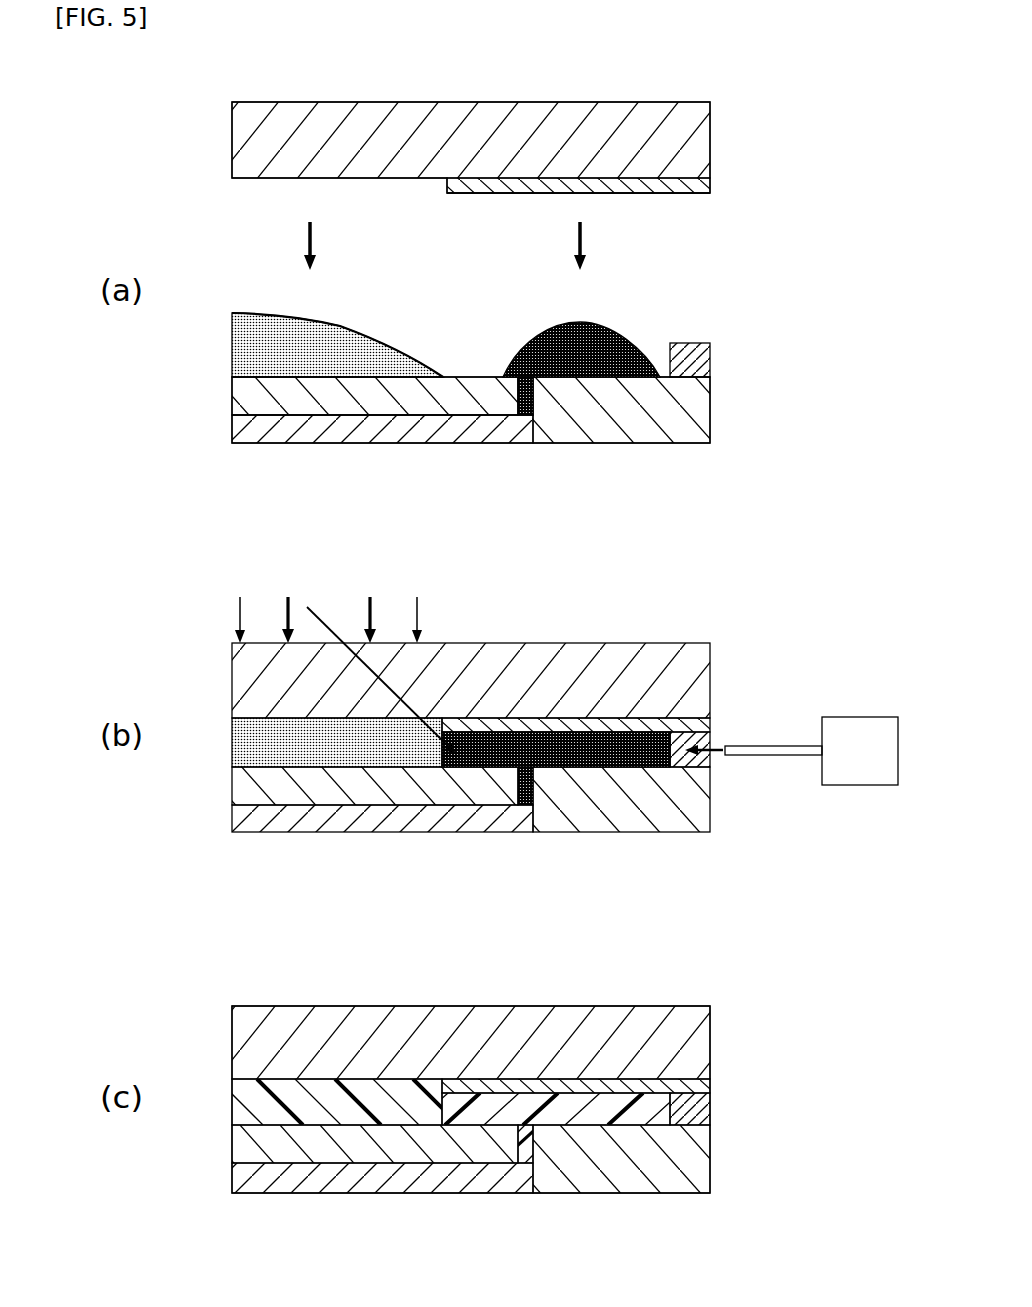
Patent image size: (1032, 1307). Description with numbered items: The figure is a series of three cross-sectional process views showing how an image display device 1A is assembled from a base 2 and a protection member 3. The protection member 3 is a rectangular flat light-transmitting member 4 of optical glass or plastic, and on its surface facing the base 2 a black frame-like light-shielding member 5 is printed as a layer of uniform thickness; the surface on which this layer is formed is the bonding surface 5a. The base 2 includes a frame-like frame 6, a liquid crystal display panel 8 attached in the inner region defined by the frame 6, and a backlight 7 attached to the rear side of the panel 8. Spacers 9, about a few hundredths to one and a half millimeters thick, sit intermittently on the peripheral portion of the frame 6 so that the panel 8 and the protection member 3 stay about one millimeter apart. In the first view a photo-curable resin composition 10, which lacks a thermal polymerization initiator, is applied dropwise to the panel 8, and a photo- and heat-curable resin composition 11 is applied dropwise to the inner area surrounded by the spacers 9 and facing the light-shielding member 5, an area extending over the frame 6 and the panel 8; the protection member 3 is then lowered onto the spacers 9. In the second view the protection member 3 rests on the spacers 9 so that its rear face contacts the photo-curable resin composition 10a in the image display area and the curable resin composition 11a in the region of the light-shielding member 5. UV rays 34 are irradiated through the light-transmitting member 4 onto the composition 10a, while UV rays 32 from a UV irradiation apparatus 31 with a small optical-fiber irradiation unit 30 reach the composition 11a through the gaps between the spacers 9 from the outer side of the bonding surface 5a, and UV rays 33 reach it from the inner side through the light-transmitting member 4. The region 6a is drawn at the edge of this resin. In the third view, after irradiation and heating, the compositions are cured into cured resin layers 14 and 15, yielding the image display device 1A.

The image display device 1A is at (178, 973).
The base 2 is at (596, 455).
The protection member 3 is at (467, 93).
The light-transmitting member 4 is at (645, 102).
The light-shielding member 5 is at (710, 184).
The bonding surface 5a is at (690, 195).
The frame 6 is at (710, 406).
The sealing region 6a is at (640, 352).
The backlight 7 is at (460, 445).
The liquid crystal display panel 8 is at (358, 400).
The spacers 9 is at (710, 358).
The photo-curable resin composition 10 is at (318, 316).
The photo-curable resin composition 10a is at (303, 755).
The photo- and heat-curable resin composition 11 is at (612, 330).
The curable resin composition 11a is at (557, 745).
The cured resin layer 14 is at (312, 1112).
The cured resin layer 15 is at (572, 1113).
The irradiation unit 30 is at (775, 757).
The UV irradiation apparatus 31 is at (848, 717).
The UV rays 32 is at (740, 745).
The UV rays 33 is at (313, 608).
The UV rays 34 is at (240, 614).